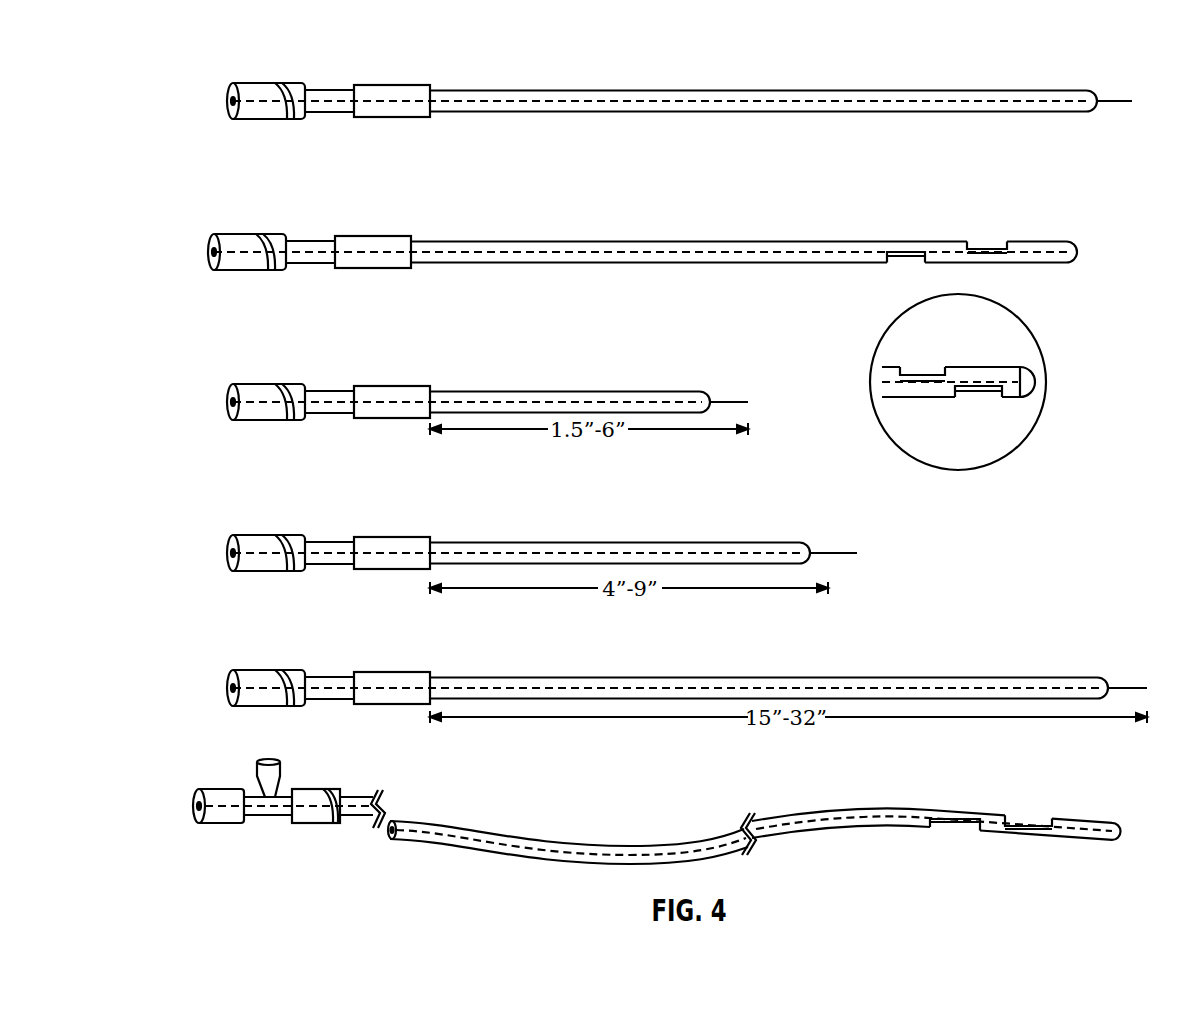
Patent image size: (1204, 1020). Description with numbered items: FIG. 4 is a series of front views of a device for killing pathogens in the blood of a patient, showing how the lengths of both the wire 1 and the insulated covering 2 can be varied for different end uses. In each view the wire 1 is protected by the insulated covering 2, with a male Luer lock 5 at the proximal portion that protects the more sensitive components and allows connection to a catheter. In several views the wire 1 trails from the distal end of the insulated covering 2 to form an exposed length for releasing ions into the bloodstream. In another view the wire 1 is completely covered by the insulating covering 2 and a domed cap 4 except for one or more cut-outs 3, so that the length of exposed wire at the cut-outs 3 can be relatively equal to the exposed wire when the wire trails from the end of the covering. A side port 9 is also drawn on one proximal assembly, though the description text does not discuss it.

The wire 1 is at (1108, 101).
The insulated covering 2 is at (618, 90).
The cut-outs 3 is at (988, 249).
The domed cap 4 is at (1030, 375).
The male Luer lock 5 is at (248, 83).
The side port 9 is at (281, 773).